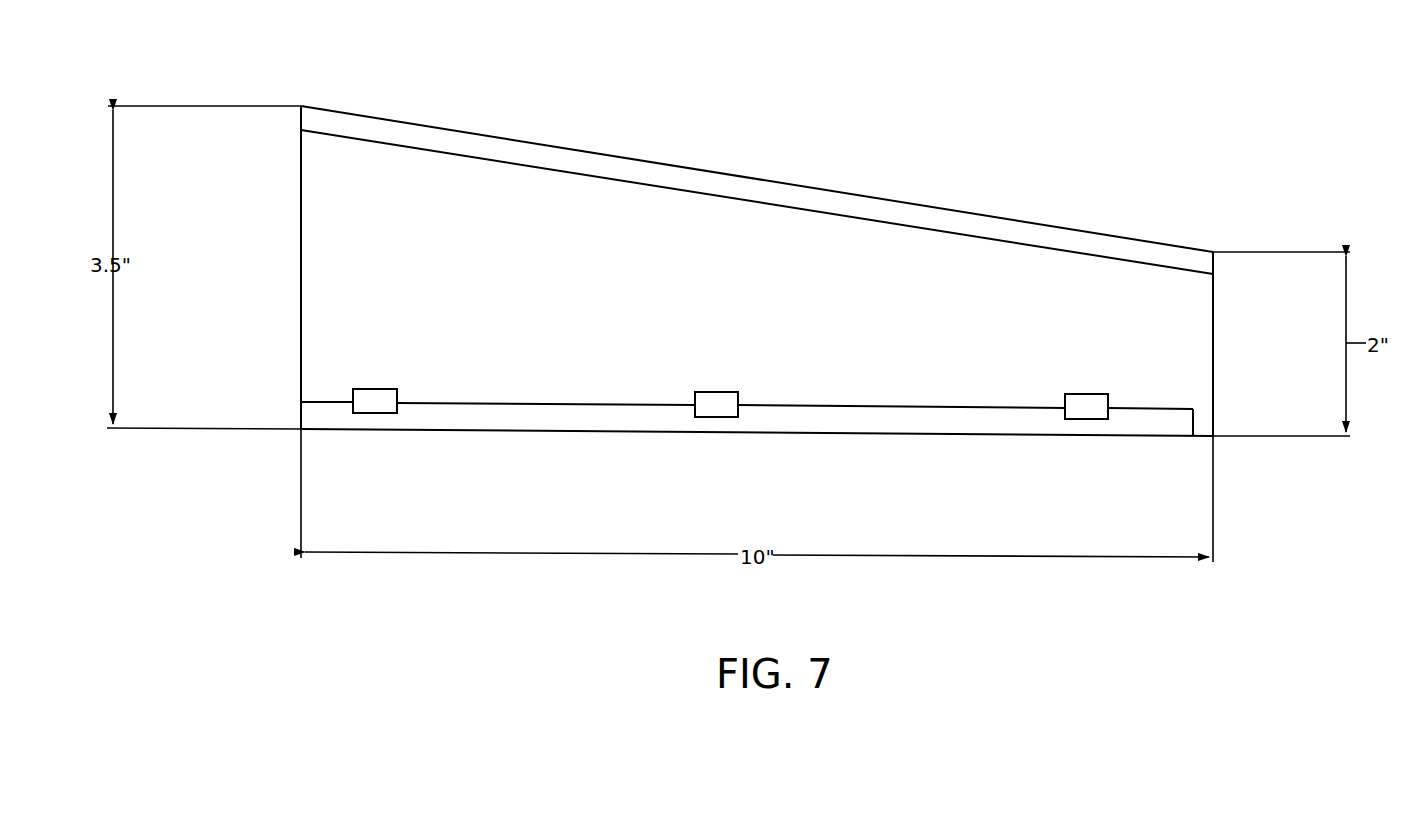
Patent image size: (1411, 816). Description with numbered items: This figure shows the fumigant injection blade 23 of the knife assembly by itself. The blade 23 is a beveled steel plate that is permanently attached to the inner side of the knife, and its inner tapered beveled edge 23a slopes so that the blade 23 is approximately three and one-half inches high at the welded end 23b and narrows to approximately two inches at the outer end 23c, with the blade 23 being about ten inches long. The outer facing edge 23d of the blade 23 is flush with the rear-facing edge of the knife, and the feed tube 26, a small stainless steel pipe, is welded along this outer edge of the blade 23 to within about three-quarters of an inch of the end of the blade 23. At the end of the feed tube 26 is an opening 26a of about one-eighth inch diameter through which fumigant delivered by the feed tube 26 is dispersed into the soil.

The blade 23 is at (859, 168).
The inner tapered beveled edge 23a is at (987, 228).
The welded end 23b is at (300, 190).
The outer end 23c is at (1215, 308).
The outer facing edge 23d is at (320, 403).
The feed tube 26 is at (897, 418).
The opening 26a is at (1195, 422).